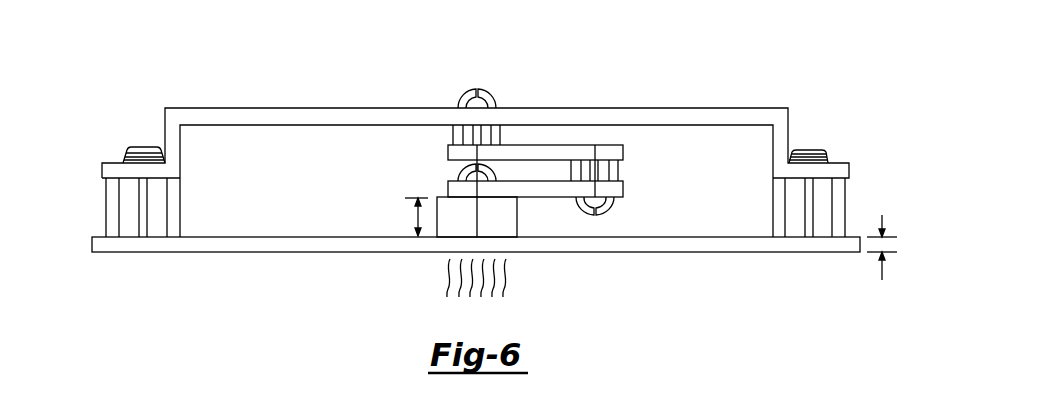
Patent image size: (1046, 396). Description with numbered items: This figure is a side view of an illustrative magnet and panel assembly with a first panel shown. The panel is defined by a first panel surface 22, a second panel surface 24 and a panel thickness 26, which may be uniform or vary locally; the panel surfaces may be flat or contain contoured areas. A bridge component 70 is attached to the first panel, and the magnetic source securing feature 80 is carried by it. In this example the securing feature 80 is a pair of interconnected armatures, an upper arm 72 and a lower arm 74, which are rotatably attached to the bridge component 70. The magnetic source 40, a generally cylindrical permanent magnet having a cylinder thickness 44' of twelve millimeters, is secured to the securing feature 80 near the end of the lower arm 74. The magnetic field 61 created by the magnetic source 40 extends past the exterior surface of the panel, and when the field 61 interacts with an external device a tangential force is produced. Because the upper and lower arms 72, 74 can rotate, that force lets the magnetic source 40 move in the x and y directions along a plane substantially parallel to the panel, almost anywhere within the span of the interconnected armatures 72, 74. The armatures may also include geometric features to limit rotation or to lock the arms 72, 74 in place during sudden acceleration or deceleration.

The bridge component 70 is at (756, 108).
The first panel surface 22 is at (707, 254).
The upper arm 72 is at (624, 150).
The lower arm 74 is at (624, 188).
The magnetic source securing feature 80 is at (611, 145).
The magnetic source 40 is at (518, 213).
The cylinder thickness 44' is at (390, 217).
The magnetic field 61 is at (447, 278).
The second panel surface 24 is at (862, 236).
The panel thickness 26 is at (882, 277).